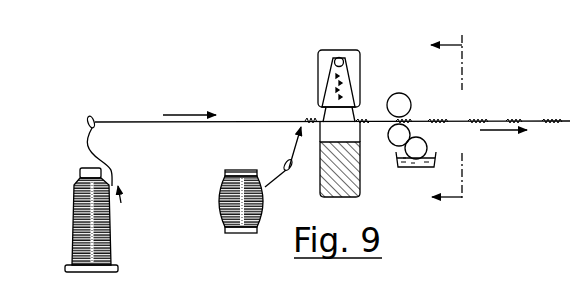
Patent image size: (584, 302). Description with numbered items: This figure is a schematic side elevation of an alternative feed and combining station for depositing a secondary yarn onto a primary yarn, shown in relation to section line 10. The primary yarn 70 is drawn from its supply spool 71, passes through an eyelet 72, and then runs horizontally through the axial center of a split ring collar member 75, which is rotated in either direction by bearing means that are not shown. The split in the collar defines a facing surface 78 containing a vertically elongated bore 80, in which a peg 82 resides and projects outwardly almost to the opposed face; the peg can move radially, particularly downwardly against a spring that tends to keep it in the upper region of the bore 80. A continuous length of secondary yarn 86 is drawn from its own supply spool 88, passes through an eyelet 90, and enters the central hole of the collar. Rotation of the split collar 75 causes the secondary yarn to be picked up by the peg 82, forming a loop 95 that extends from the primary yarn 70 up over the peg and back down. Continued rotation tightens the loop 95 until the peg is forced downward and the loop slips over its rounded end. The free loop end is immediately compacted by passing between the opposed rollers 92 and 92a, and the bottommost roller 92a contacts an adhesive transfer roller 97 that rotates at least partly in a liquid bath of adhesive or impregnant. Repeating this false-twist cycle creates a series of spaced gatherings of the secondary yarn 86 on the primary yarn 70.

The section line 10- 10 is at (431, 125).
The primary yarn 70 is at (147, 121).
The supply spool 71 is at (92, 272).
The eyelet 72 is at (94, 116).
The split ring collar member 75 is at (326, 107).
The facing surface 78 is at (353, 56).
The elongated bore 80 is at (335, 70).
The peg 82 is at (342, 58).
The secondary yarn 86 is at (283, 164).
The supply spool 88 is at (225, 171).
The eyelet 90 is at (286, 159).
The opposed roller 92 is at (401, 93).
The bottommost roller 92a is at (406, 129).
The loop 95 is at (331, 90).
The adhesive transfer roller 97 is at (412, 138).